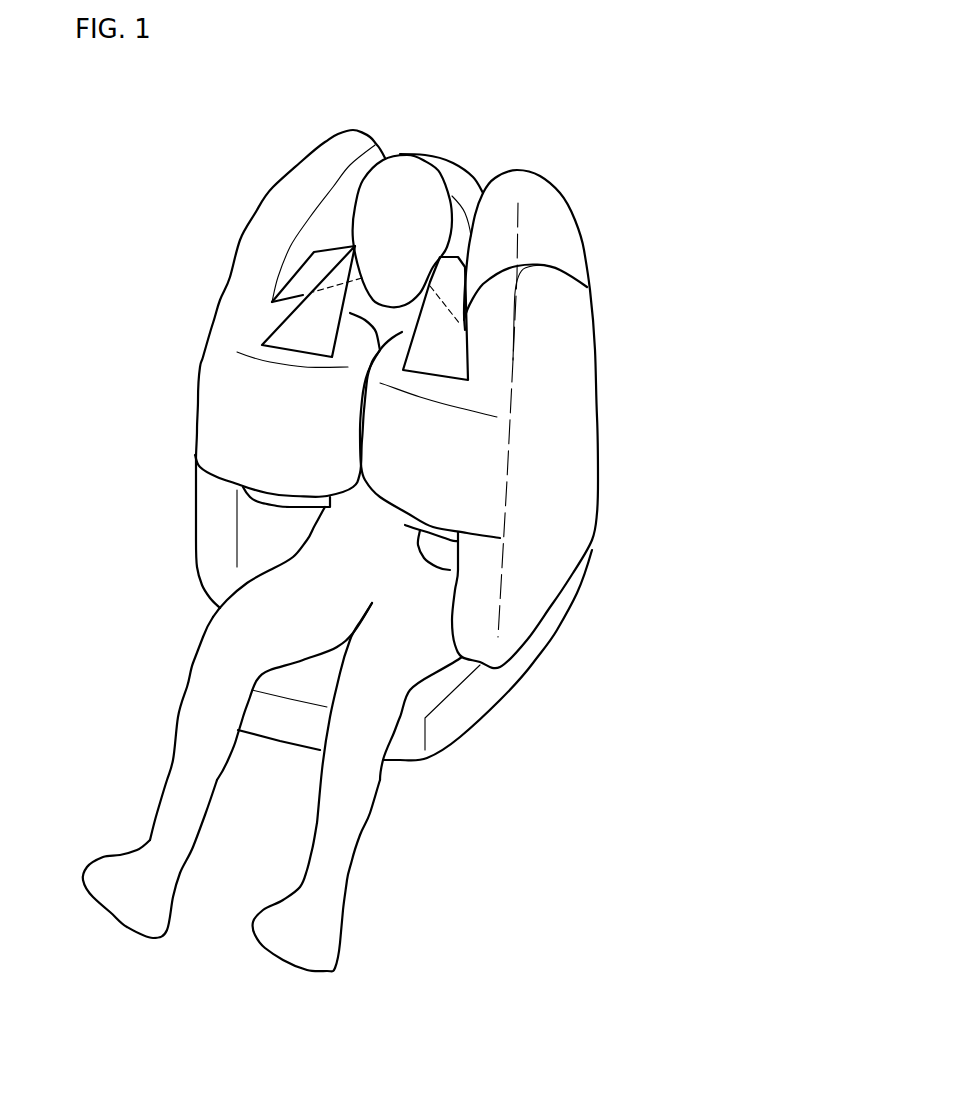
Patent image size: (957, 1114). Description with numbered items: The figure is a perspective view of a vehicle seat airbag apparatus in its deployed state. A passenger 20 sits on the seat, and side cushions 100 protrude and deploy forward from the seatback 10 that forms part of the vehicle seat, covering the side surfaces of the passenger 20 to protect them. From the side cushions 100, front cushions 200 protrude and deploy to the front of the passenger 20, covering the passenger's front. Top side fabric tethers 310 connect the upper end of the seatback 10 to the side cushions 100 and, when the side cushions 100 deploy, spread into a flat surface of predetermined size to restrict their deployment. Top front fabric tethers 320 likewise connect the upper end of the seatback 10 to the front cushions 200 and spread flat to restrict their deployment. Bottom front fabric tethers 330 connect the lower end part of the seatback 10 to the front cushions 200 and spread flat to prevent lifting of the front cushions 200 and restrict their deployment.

The seatback 10 is at (460, 180).
The passenger 20 is at (357, 548).
The side cushions 100 is at (233, 260).
The front cushions 200 is at (270, 417).
The top side fabric tethers 310 is at (308, 270).
The top front fabric tethers 320 is at (300, 330).
The bottom front fabric tethers 330 is at (273, 512).